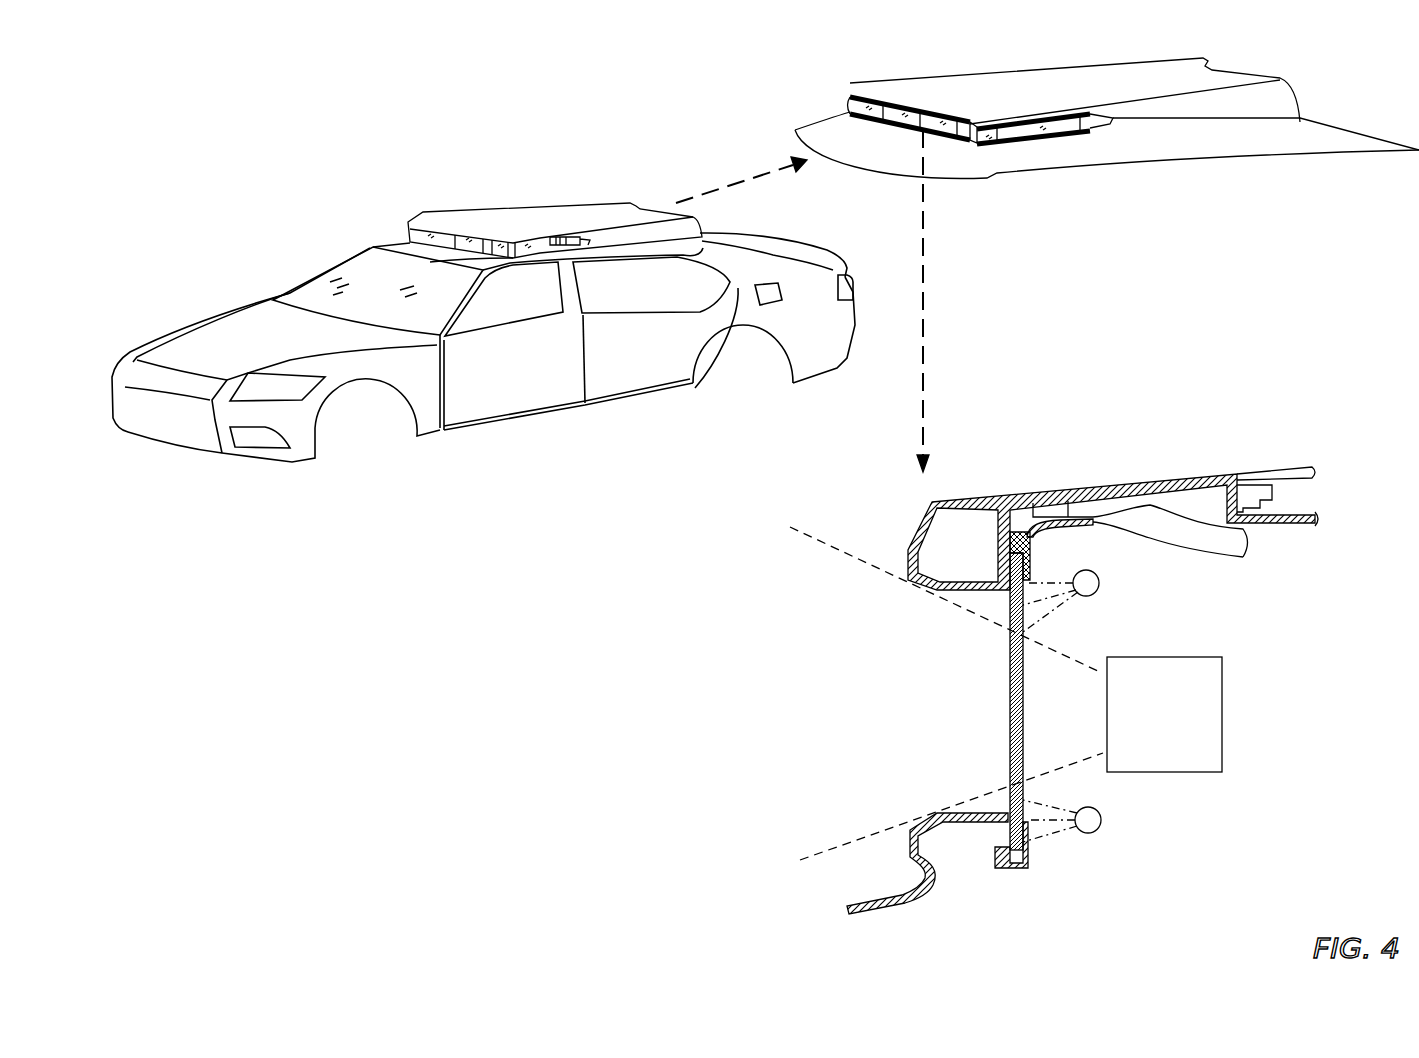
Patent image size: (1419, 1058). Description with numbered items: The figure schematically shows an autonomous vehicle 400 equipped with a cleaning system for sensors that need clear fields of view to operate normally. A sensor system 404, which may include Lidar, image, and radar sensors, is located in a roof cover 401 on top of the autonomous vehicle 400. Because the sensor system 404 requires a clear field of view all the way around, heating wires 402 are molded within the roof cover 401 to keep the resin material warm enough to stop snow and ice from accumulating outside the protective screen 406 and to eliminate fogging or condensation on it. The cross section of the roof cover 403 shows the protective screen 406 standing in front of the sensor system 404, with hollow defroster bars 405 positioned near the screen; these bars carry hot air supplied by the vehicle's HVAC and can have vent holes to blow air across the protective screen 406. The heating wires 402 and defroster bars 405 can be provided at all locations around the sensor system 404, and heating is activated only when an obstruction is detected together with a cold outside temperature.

The autonomous vehicle 400 is at (300, 248).
The roof cover 401 is at (410, 206).
The heating wires 402 is at (848, 85).
The cross section of the roof cover 403 is at (1130, 450).
The sensor system 404 is at (1232, 645).
The hollow defroster bars 405 is at (1120, 832).
The protective screen 406 is at (994, 682).